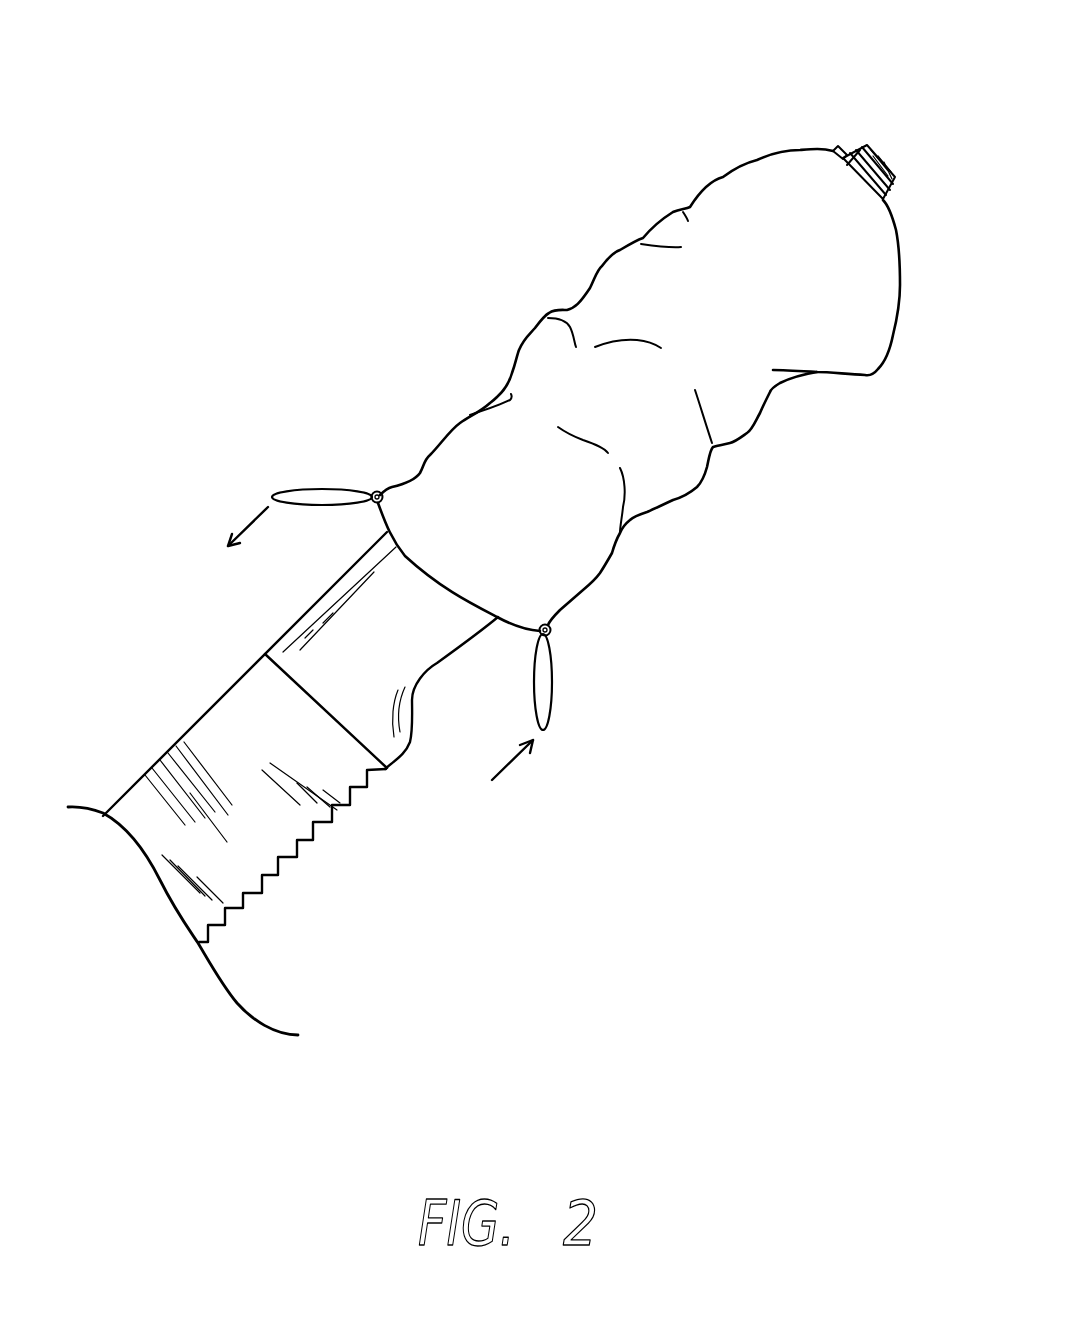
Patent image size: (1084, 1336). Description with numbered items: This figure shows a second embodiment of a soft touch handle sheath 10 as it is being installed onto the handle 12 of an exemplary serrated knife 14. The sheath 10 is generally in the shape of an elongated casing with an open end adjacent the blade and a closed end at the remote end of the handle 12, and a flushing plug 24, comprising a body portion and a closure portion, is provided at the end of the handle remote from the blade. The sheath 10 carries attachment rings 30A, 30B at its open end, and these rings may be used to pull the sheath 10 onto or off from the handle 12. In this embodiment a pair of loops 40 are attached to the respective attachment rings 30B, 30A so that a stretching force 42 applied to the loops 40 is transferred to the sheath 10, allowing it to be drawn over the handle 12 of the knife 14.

The soft touch handle sheath 10 is at (770, 392).
The handle 12 is at (390, 743).
The serrated knife 14 is at (268, 850).
The flushing plug 24 is at (863, 125).
The attachment ring 30A is at (553, 630).
The attachment ring 30B is at (378, 490).
The loops 40 is at (318, 489).
The stretching force 42 is at (265, 506).